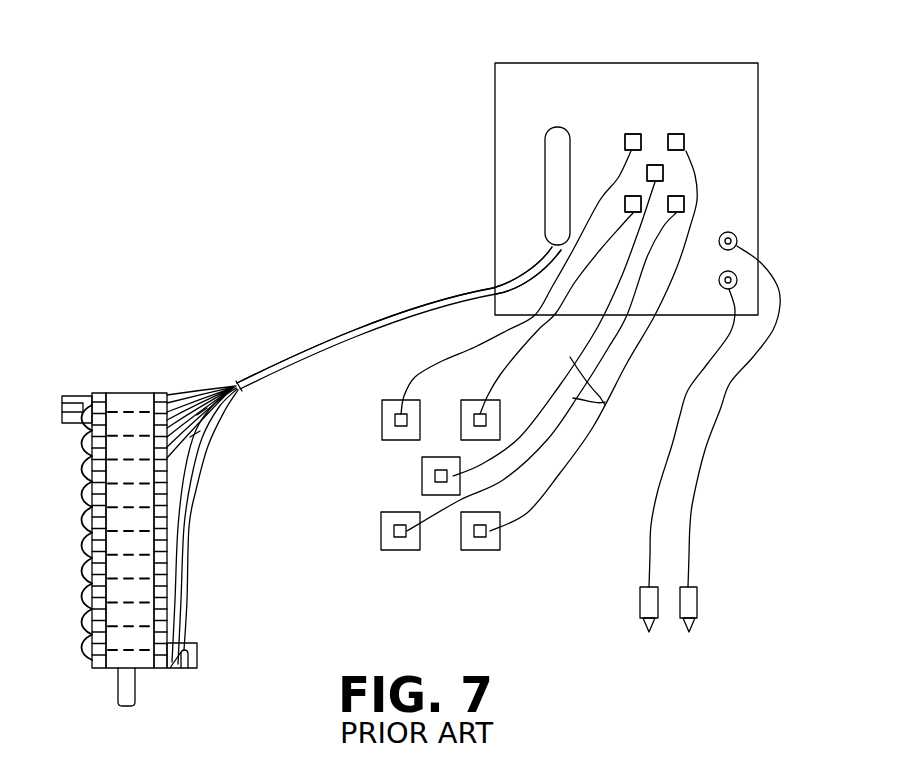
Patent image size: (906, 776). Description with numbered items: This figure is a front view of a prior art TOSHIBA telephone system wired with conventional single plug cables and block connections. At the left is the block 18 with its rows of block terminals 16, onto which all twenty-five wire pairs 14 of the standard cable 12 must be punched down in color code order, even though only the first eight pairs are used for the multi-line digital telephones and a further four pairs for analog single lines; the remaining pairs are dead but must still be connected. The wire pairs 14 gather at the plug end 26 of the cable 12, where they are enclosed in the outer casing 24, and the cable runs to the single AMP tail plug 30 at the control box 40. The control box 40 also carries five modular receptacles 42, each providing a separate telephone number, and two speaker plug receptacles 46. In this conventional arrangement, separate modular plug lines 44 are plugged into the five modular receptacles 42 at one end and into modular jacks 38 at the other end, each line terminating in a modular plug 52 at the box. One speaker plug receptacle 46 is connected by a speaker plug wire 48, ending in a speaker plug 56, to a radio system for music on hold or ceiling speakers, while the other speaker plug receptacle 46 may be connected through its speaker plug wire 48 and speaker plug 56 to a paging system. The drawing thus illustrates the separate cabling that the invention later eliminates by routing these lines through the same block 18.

The cable 12 is at (395, 316).
The wire pairs 14 is at (178, 506).
The block terminals 16 is at (100, 394).
The block 18 is at (122, 393).
The outer casing 24 is at (342, 343).
The plug end 26 is at (495, 260).
The plug 30 is at (550, 128).
The modular jack 38 is at (461, 418).
The control box 40 is at (758, 128).
The modular receptacles 42 is at (677, 133).
The modular plug lines 44 is at (537, 325).
The speaker plug receptacle 46 is at (735, 232).
The speaker plug wire 48 is at (650, 533).
The modular plug 52 is at (628, 137).
The speaker plug 56 is at (738, 238).